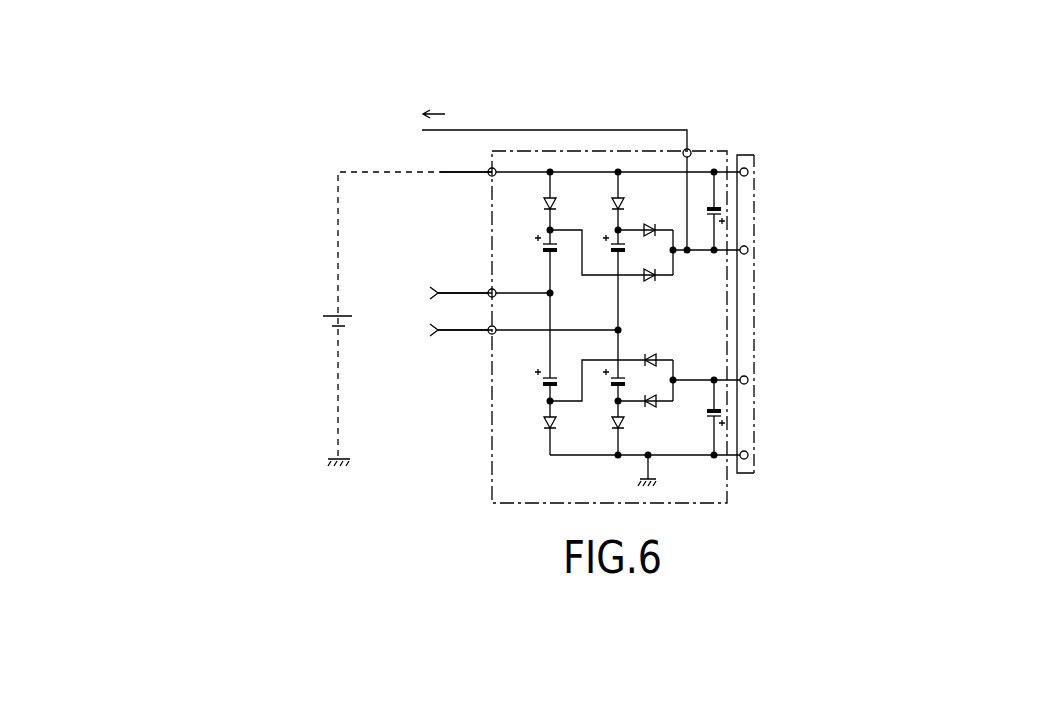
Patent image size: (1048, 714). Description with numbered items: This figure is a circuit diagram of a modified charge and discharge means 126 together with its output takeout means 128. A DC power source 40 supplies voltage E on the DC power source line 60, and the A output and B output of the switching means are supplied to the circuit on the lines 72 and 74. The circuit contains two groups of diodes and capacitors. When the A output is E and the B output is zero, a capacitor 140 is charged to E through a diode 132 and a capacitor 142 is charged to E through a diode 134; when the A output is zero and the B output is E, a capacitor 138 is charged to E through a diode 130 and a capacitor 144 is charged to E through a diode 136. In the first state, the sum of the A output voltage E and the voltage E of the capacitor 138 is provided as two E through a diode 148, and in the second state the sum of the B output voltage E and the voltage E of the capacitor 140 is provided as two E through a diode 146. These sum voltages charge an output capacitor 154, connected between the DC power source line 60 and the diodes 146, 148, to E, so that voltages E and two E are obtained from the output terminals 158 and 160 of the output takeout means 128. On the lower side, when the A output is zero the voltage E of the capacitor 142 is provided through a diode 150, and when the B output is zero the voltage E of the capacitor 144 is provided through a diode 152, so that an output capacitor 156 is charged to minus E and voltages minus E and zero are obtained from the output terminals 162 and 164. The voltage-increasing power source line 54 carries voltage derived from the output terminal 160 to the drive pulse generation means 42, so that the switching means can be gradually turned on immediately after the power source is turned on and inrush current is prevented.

The DC power source 40 is at (328, 310).
The drive pulse generation means 42 is at (512, 90).
The voltage-increasing power source line 54 is at (676, 124).
The DC power source line 60 is at (488, 166).
The line 72 is at (448, 287).
The line 74 is at (458, 333).
The charge and discharge means 126 is at (738, 130).
The output takeout means 128 is at (757, 207).
The diode 130 is at (556, 208).
The diode 132 is at (624, 208).
The diode 134 is at (556, 423).
The diode 136 is at (624, 423).
The capacitor 138 is at (556, 251).
The capacitor 140 is at (624, 250).
The capacitor 142 is at (556, 370).
The capacitor 144 is at (612, 386).
The diode 146 is at (653, 224).
The diode 148 is at (650, 280).
The diode 150 is at (653, 353).
The diode 152 is at (650, 404).
The output capacitor 154 is at (711, 214).
The output capacitor 156 is at (711, 414).
The output terminal 158 is at (750, 164).
The output terminal 160 is at (750, 245).
The output terminal 162 is at (751, 373).
The output terminal 164 is at (751, 448).